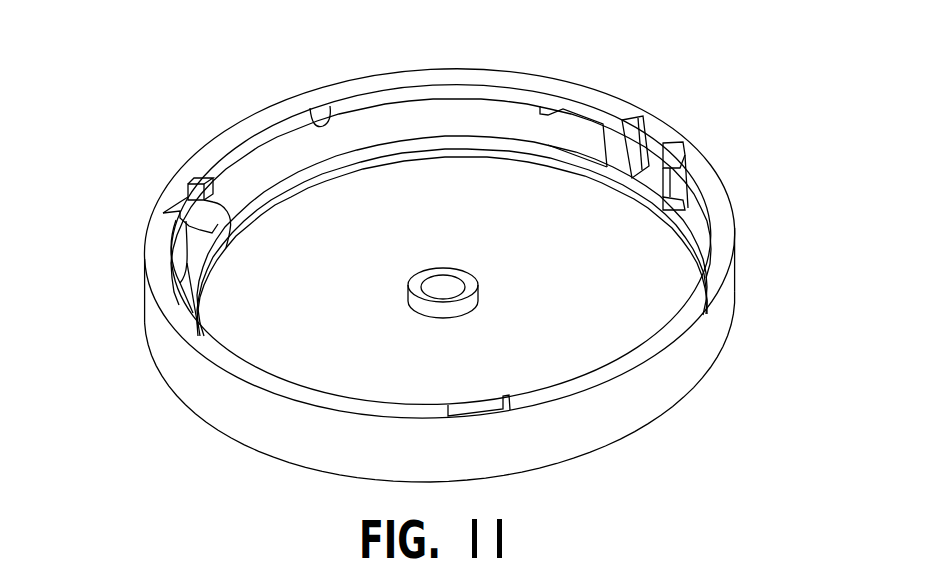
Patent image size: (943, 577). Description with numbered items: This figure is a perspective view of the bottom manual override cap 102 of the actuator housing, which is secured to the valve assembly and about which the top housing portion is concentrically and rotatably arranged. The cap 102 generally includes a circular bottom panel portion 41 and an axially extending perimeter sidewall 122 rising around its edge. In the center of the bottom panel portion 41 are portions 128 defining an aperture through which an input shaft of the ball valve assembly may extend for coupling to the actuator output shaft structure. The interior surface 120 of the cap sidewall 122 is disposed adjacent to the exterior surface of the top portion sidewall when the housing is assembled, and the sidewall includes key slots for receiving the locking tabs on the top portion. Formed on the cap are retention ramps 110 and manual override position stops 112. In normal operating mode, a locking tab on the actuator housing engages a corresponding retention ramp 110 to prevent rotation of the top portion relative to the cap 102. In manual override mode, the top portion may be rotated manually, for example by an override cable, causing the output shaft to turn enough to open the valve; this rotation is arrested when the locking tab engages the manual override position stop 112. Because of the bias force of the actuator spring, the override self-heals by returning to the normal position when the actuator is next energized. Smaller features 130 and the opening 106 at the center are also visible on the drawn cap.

The circular bottom panel portion 41 is at (386, 205).
The manual override cap 102 is at (452, 247).
The central opening 106 is at (439, 290).
The retention ramp 110 is at (541, 121).
The manual override position stop 112 is at (226, 248).
The interior surface 120 is at (310, 108).
The perimeter sidewall 122 is at (146, 290).
The aperture-defining portions 128 is at (407, 293).
The tabs 130 is at (188, 180).